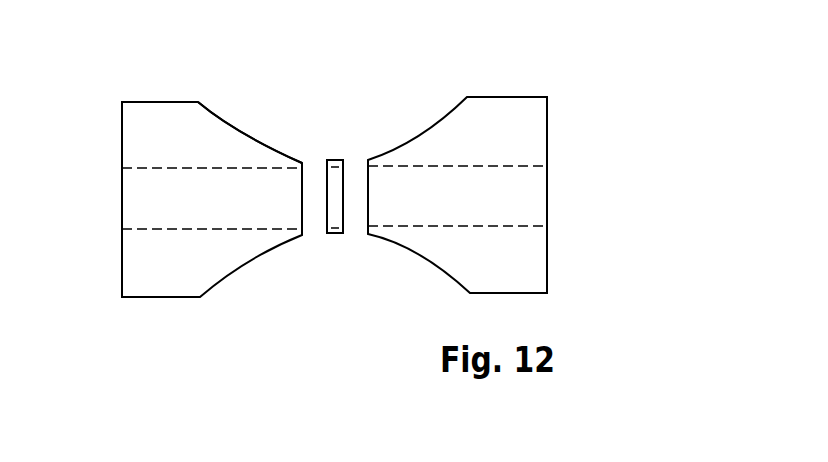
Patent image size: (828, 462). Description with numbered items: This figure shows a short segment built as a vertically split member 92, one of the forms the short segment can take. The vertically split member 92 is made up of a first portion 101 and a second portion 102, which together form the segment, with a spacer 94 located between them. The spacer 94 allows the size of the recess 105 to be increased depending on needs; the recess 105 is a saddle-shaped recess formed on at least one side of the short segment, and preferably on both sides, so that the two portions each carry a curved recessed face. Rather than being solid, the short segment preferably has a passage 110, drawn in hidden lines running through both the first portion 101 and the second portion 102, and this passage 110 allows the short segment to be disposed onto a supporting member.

The first portion 101 is at (189, 138).
The recess 105 is at (238, 130).
The spacer 94 is at (332, 158).
The second portion 102 is at (523, 249).
The passage 110 is at (548, 181).
The vertically split member 92 is at (337, 308).